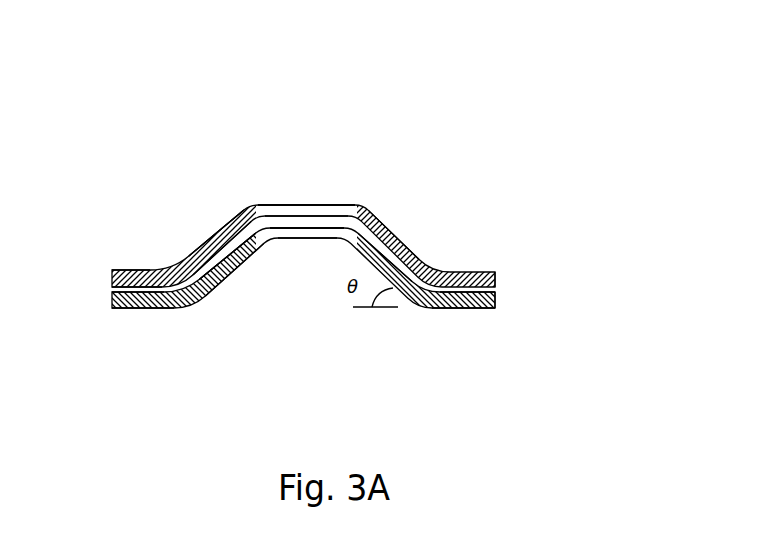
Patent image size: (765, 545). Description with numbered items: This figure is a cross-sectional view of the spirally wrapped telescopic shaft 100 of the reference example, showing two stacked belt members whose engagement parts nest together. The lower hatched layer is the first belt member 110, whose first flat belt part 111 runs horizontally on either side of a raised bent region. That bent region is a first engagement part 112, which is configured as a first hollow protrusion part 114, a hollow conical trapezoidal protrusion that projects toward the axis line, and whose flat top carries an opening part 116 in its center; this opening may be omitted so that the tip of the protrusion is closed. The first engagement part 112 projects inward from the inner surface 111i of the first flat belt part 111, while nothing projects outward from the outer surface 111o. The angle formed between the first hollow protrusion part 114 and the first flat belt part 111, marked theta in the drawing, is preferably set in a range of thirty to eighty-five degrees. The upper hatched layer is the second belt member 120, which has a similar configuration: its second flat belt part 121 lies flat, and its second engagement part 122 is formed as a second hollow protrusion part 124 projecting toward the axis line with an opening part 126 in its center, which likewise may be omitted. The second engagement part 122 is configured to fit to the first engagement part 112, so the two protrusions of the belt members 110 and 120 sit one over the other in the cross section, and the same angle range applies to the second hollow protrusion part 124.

The spirally wrapped telescopic shaft 100 is at (580, 154).
The first belt member 110 is at (431, 357).
The first flat belt part 111 is at (163, 309).
The inner surface 111i is at (456, 271).
The outer surface 111o is at (462, 309).
The first engagement part 112 is at (327, 348).
The first hollow protrusion part 114 is at (238, 277).
The opening part 116 is at (298, 240).
The second belt member 120 is at (430, 215).
The second flat belt part 121 is at (162, 268).
The second engagement part 122 is at (295, 147).
The second hollow protrusion part 124 is at (228, 226).
The opening part 126 is at (298, 207).